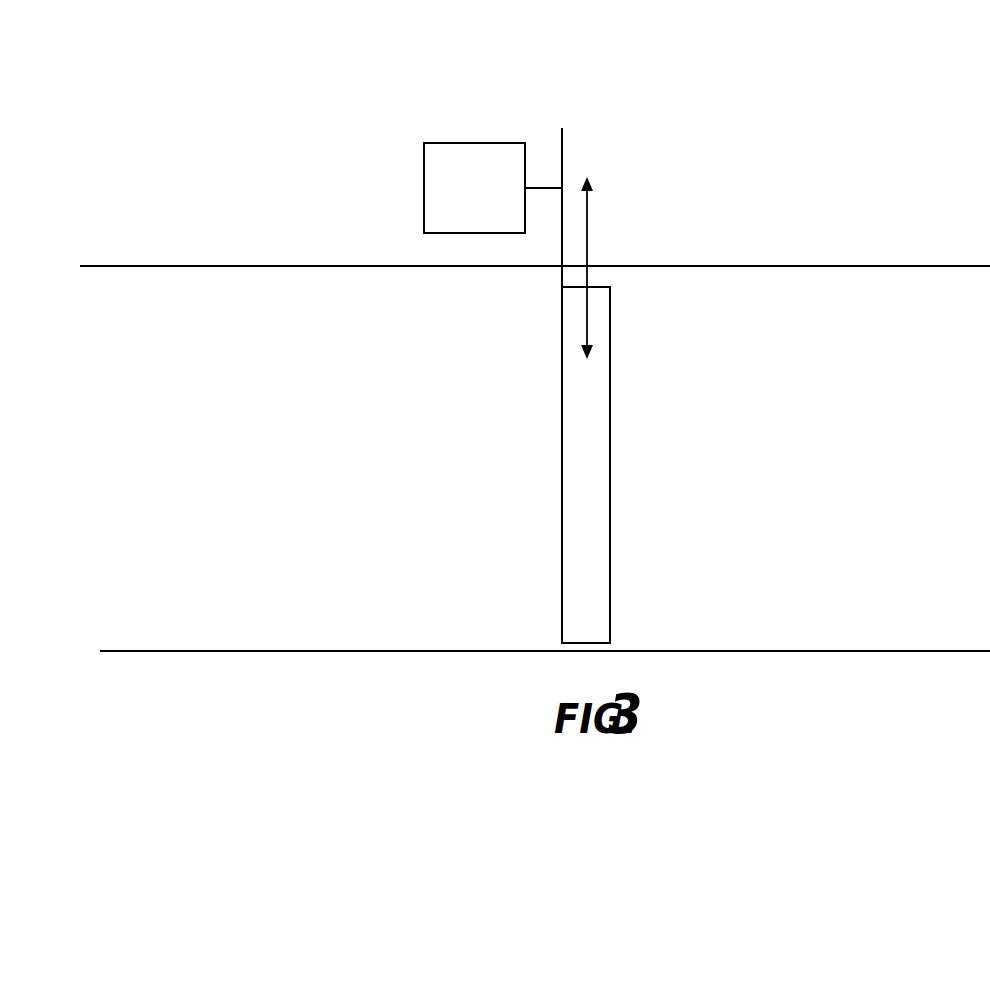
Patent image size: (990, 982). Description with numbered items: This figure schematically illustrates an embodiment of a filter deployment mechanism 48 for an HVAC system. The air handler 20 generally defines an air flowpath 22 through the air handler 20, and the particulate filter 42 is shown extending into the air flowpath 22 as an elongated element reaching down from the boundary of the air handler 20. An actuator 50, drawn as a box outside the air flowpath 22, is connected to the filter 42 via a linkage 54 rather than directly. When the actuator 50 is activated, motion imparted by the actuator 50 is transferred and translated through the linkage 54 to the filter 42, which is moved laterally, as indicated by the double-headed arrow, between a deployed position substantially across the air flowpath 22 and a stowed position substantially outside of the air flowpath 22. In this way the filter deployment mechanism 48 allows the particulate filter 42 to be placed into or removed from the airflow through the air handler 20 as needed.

The filter deployment mechanism 48 is at (306, 151).
The air handler 20 is at (868, 265).
The air flowpath 22 is at (378, 453).
The actuator 50 is at (485, 150).
The linkage 54 is at (562, 143).
The particulate filter 42 is at (595, 492).